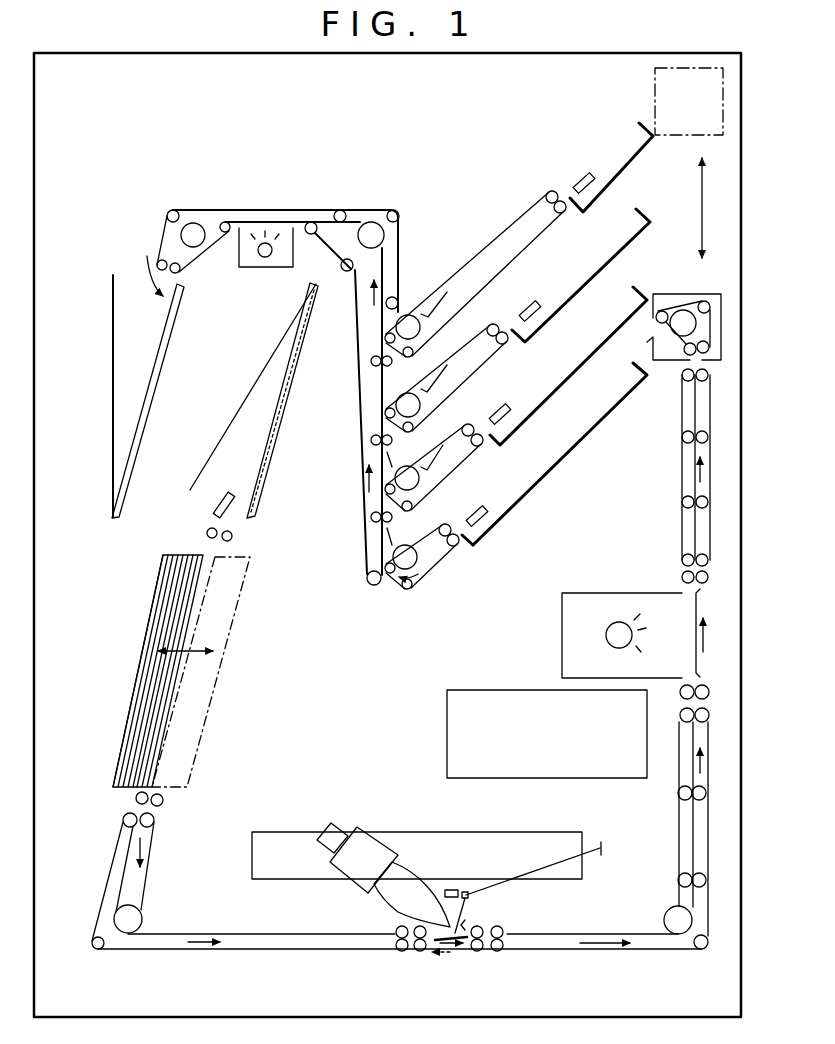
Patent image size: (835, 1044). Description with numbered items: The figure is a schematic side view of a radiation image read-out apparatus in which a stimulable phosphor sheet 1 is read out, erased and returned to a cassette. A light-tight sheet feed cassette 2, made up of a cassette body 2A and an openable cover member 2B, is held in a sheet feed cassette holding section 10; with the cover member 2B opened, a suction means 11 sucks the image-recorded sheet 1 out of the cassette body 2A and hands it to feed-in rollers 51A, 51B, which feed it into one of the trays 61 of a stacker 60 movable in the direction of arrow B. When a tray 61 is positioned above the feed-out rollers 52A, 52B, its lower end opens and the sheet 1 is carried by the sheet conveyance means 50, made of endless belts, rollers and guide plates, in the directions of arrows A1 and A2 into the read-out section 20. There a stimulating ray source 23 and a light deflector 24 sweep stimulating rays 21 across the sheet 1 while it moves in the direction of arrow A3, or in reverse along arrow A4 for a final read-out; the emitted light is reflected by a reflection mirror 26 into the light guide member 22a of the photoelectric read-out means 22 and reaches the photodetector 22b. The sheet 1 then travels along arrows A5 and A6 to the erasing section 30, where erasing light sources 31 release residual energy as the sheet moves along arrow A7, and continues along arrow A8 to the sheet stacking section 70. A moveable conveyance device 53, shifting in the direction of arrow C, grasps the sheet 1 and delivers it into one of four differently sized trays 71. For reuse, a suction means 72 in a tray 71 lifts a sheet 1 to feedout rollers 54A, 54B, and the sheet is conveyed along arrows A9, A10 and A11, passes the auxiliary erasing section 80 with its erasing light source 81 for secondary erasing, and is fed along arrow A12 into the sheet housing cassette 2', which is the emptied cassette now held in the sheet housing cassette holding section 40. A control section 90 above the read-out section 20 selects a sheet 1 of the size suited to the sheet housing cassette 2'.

The stimulable phosphor sheet 1 is at (273, 448).
The sheet feed cassette 2 is at (295, 400).
The sheet housing cassette 2' is at (121, 401).
The cassette body 2A is at (297, 363).
The cover member 2B is at (222, 442).
The sheet feed cassette holding section 10 is at (252, 355).
The suction means 11 is at (230, 492).
The read-out section 20 is at (398, 822).
The stimulating rays 21 is at (537, 868).
The photoelectric read-out means 22 is at (335, 887).
The light guide member 22a is at (393, 897).
The photodetector 22b is at (357, 843).
The stimulating ray source 23 is at (450, 835).
The light deflector 24 is at (450, 890).
The reflection mirror 26 is at (463, 927).
The erasing section 30 is at (610, 565).
The erasing light source 31 is at (608, 626).
The sheet housing cassette holding section 40 is at (89, 330).
The sheet conveyance means 50 is at (343, 200).
The feed-in roller 51A is at (206, 533).
The feed-in roller 51B is at (234, 538).
The feed-out roller 52A is at (135, 798).
The feed-out roller 52B is at (164, 800).
The moveable conveyance device 53 is at (672, 88).
The feedout roller 54A is at (488, 533).
The feedout roller 54B is at (455, 545).
The stacker 60 is at (132, 632).
The tray 61 is at (130, 702).
The sheet stacking section 70 is at (547, 165).
The tray 71 is at (620, 173).
The suction means 72 is at (584, 175).
The auxiliary erasing section 80 is at (231, 253).
The erasing light source 81 is at (266, 258).
The control section 90 is at (447, 715).
The arrow A1 is at (143, 850).
The arrow A2 is at (197, 940).
The arrow A3 is at (455, 945).
The arrow A4 is at (440, 955).
The arrow A5 is at (605, 947).
The arrow A6 is at (707, 762).
The arrow A7 is at (703, 638).
The arrow A8 is at (700, 480).
The arrow A9 is at (420, 587).
The arrow A10 is at (365, 483).
The arrow A11 is at (378, 292).
The arrow A12 is at (137, 260).
The arrow B is at (187, 653).
The arrow C is at (702, 196).